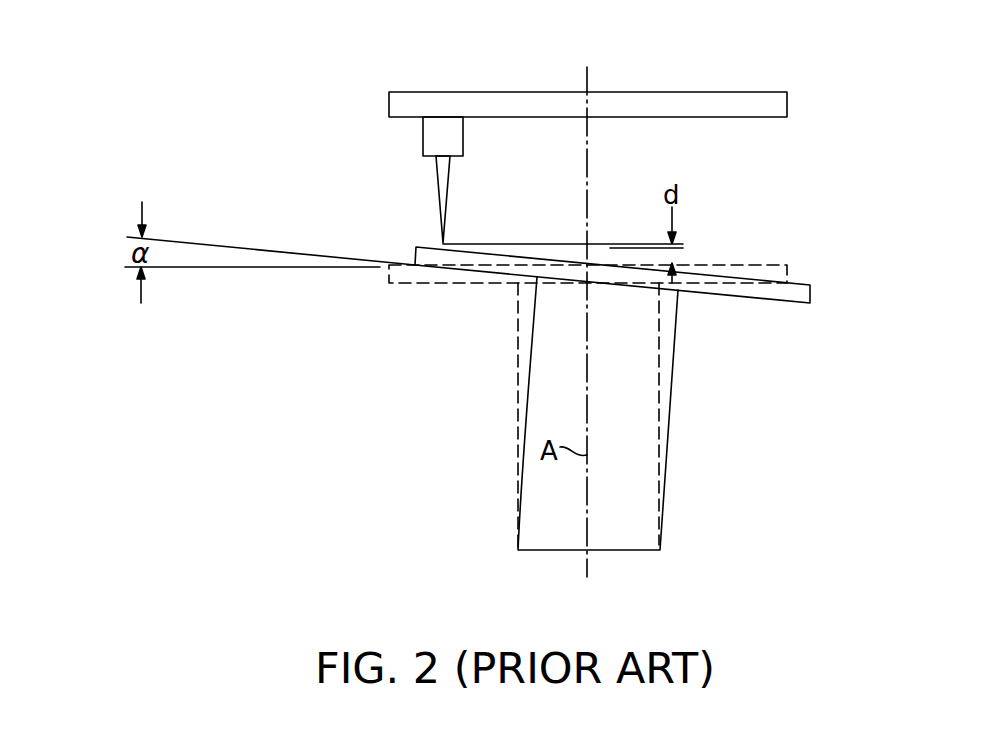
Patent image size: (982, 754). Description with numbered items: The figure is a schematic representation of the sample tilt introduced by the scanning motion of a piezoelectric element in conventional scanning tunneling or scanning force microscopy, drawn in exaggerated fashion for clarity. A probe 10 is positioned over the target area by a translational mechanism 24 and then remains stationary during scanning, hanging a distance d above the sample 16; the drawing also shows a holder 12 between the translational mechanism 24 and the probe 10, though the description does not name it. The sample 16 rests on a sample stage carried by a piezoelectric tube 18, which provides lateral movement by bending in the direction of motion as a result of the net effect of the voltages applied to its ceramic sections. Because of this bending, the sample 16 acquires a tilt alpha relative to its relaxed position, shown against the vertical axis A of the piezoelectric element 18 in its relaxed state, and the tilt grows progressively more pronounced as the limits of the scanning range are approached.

The translational mechanism 24 is at (716, 100).
The probe holder 12 is at (458, 143).
The probe 10 is at (444, 197).
The sample 16 is at (810, 300).
The piezoelectric tube 18 is at (524, 309).